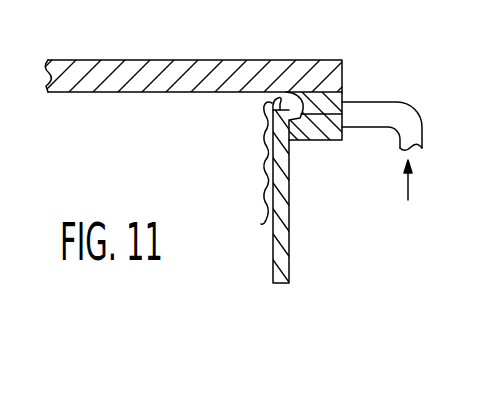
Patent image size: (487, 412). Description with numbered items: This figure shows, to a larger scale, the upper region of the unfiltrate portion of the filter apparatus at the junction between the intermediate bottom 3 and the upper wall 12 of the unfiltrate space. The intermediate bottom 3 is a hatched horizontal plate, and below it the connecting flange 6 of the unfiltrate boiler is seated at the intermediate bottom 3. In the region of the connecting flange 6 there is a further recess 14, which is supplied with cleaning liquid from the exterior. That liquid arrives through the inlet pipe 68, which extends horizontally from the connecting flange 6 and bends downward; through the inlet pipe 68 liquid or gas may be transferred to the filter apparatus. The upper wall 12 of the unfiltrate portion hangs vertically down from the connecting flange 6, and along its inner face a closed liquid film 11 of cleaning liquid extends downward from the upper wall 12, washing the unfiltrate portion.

The intermediate bottom 3 is at (145, 73).
The connecting flange 6 is at (328, 133).
The liquid film 11 is at (262, 162).
The upper wall 12 is at (266, 266).
The further recess 14 is at (292, 107).
The inlet pipe 68 is at (383, 102).